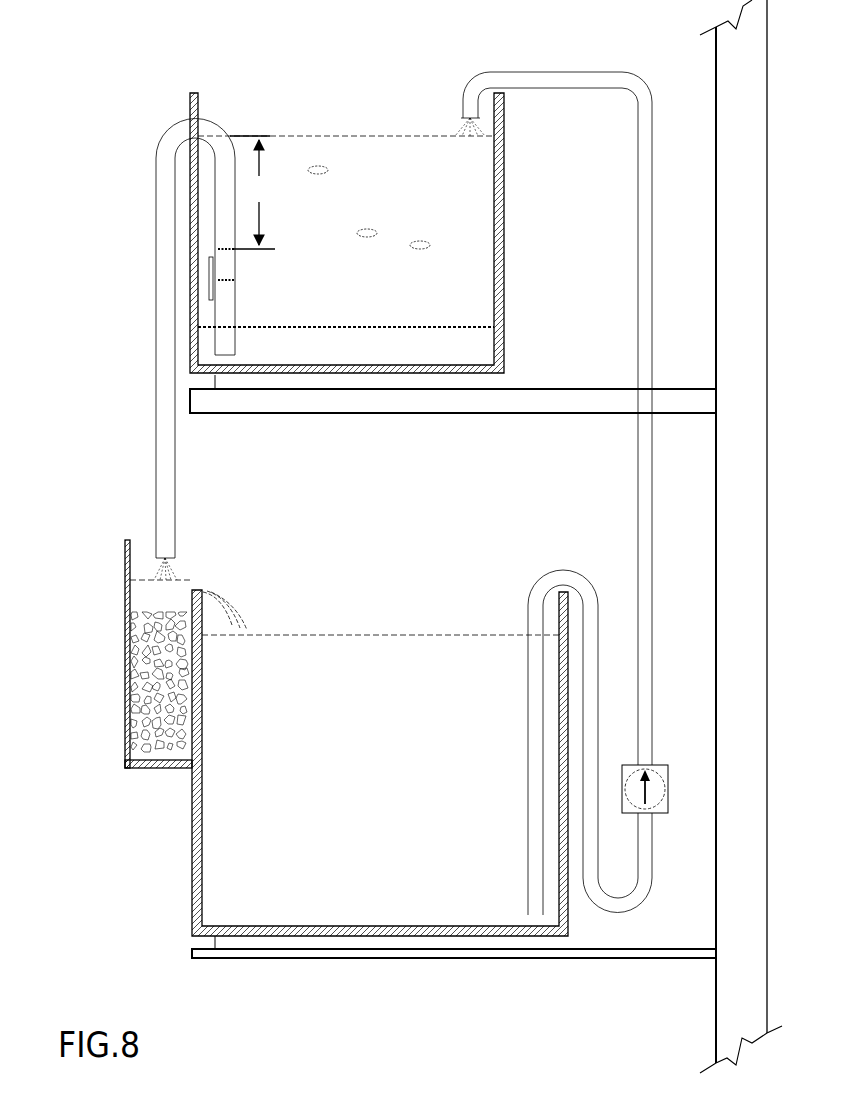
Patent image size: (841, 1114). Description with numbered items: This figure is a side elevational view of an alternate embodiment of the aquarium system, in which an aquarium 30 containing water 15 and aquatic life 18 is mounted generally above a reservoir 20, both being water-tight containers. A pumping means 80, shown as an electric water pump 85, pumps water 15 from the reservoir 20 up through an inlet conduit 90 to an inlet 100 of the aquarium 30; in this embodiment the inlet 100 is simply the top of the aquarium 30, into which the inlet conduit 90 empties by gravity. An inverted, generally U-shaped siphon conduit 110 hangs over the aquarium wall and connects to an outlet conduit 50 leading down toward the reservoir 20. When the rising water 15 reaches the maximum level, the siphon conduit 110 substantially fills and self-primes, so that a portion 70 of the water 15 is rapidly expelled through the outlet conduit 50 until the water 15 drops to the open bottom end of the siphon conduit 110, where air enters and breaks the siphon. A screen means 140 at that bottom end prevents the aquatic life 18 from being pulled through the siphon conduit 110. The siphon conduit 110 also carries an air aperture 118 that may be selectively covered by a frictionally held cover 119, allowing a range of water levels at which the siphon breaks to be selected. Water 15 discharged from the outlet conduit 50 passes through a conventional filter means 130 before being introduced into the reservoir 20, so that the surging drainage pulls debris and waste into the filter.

The water 15 is at (343, 136).
The aquatic life 18 is at (362, 230).
The reservoir 20 is at (192, 838).
The aquarium 30 is at (200, 92).
The outlet conduit 50 is at (156, 433).
The portion of the water 70 is at (252, 192).
The pumping means 80 is at (668, 819).
The water pump 85 is at (668, 790).
The inlet conduit 90 is at (653, 255).
The inlet 100 is at (470, 94).
The siphon conduit 110 is at (178, 124).
The air aperture 118 is at (237, 250).
The cover 119 is at (237, 287).
The filter means 130 is at (185, 576).
The screen means 140 is at (369, 334).